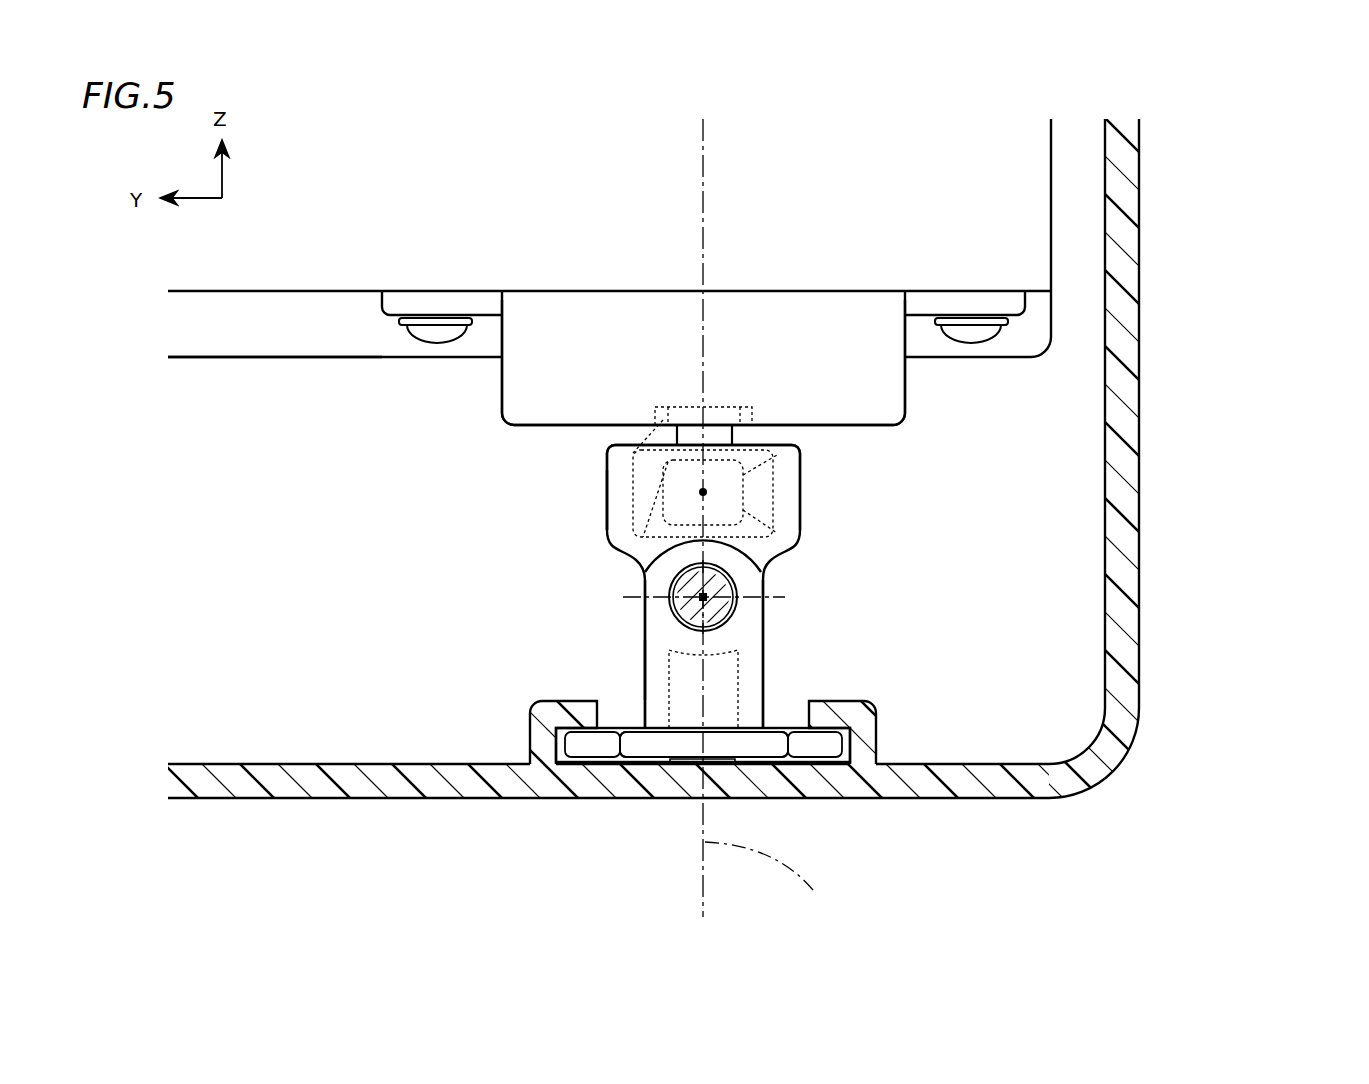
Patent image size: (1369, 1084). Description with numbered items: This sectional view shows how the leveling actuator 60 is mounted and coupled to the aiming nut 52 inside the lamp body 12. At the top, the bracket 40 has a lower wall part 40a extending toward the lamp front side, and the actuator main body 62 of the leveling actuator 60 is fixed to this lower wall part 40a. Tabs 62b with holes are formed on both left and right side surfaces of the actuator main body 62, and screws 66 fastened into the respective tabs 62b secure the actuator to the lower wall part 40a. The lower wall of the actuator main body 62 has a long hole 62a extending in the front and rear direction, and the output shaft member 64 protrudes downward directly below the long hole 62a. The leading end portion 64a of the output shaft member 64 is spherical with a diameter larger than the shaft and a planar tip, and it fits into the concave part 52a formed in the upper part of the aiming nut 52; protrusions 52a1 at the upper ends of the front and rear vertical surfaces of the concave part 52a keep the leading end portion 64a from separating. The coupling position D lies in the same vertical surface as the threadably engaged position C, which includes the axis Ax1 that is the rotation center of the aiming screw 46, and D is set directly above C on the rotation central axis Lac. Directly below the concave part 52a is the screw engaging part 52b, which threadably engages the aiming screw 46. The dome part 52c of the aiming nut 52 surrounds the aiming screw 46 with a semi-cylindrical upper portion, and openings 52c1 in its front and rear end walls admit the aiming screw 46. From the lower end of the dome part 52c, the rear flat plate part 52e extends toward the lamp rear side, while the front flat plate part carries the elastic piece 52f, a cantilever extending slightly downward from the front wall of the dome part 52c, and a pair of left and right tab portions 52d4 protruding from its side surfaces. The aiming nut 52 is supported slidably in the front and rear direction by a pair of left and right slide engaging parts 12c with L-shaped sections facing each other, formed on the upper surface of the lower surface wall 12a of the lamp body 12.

The lamp body 12 is at (1148, 541).
The lower surface wall 12a is at (367, 790).
The slide engaging parts 12c is at (555, 705).
The bracket 40 is at (1060, 192).
The lower wall part 40a is at (286, 293).
The aiming screw 46 is at (744, 589).
The aiming nut 52 is at (808, 514).
The concave part 52a is at (617, 510).
The protrusions 52a1 is at (617, 557).
The screw engaging part 52b is at (738, 668).
The dome part 52c is at (652, 614).
The openings 52c1 is at (688, 622).
The tab portions 52d4 is at (575, 740).
The rear flat plate part 52e is at (757, 748).
The elastic piece 52f is at (688, 762).
The leveling actuator 60 is at (511, 431).
The actuator main body 62 is at (890, 400).
The long hole 62a is at (650, 455).
The tabs 62b is at (388, 317).
The output shaft member 64 is at (720, 436).
The leading end portion 64a is at (775, 537).
The screws 66 is at (435, 342).
The coupling position D is at (703, 492).
The axis Ax1 is at (740, 623).
The threadably engaged position C is at (703, 597).
The rotation central axis Lac is at (775, 882).